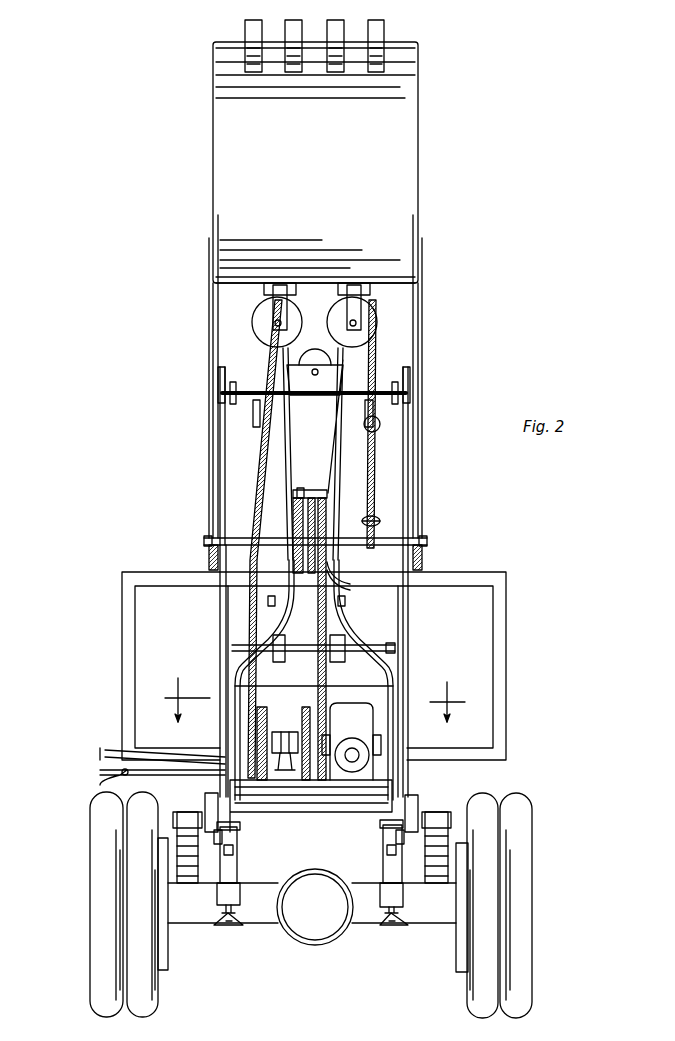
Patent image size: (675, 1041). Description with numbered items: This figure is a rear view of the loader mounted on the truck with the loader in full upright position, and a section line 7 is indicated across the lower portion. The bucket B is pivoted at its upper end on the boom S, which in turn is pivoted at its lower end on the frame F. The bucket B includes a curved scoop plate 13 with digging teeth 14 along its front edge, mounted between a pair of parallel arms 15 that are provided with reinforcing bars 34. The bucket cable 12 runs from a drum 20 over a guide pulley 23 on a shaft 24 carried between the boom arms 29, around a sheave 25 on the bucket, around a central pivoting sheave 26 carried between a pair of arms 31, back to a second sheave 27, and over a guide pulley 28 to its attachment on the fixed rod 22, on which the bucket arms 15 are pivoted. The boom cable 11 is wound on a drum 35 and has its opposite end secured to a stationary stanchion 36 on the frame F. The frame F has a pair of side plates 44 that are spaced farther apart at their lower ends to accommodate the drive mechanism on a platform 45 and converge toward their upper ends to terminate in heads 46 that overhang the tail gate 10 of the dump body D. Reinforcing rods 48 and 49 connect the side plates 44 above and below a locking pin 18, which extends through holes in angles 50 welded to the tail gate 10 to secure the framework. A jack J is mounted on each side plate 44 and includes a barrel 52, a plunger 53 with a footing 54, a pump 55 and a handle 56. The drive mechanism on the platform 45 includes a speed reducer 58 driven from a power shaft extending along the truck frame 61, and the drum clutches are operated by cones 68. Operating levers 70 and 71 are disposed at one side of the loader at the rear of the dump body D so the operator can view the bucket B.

The tail gate 10 is at (485, 608).
The cable 11 is at (318, 637).
The cable 12 is at (297, 346).
The scoop plate 13 is at (324, 192).
The digging teeth 14 is at (252, 28).
The arms 15 is at (209, 300).
The locking pin 18 is at (395, 648).
The drum 20 is at (250, 712).
The fixed rod 22 is at (373, 517).
The guide pulley 23 is at (254, 412).
The shaft 24 is at (381, 390).
The sheave 25 is at (294, 320).
The central pivoting sheave 26 is at (315, 371).
The second sheave 27 is at (366, 320).
The guide pulley 28 is at (368, 432).
The arms 29 is at (220, 602).
The arms 31 is at (333, 423).
The reinforcing bars 34 is at (220, 422).
The drum 35 is at (327, 712).
The stanchion 36 is at (299, 490).
The side plates 44 is at (237, 668).
The platform 45 is at (318, 795).
The heads 46 is at (293, 556).
The reinforcing rod 48 is at (310, 605).
The reinforcing rod 49 is at (292, 685).
The angles 50 is at (284, 658).
The barrel 52 is at (238, 838).
The plunger 53 is at (238, 912).
The footing 54 is at (238, 925).
The pump 55 is at (238, 868).
The handle 56 is at (192, 852).
The speed reducer 58 is at (358, 741).
The frame 61 is at (205, 800).
The cones 68 is at (296, 732).
The operating lever 70 is at (103, 752).
The operating lever 71 is at (100, 772).
The bucket B is at (420, 161).
The dump body D is at (120, 633).
The frame F is at (352, 590).
The jack J is at (247, 852).
The boom S is at (410, 602).
The section line 7- 7 is at (315, 699).